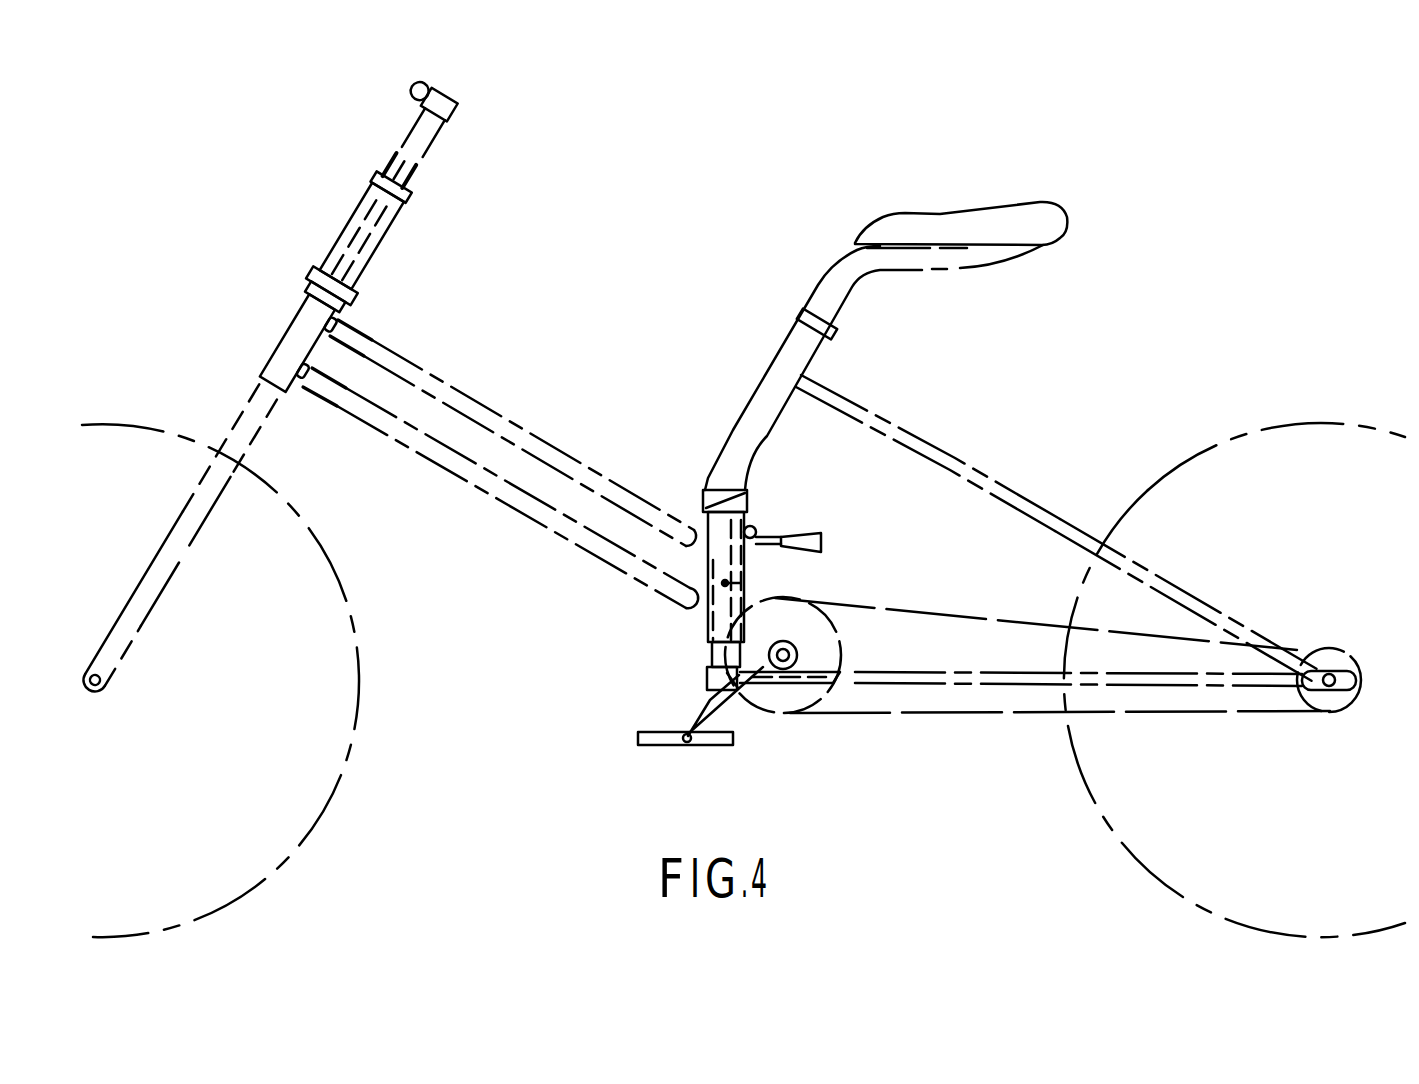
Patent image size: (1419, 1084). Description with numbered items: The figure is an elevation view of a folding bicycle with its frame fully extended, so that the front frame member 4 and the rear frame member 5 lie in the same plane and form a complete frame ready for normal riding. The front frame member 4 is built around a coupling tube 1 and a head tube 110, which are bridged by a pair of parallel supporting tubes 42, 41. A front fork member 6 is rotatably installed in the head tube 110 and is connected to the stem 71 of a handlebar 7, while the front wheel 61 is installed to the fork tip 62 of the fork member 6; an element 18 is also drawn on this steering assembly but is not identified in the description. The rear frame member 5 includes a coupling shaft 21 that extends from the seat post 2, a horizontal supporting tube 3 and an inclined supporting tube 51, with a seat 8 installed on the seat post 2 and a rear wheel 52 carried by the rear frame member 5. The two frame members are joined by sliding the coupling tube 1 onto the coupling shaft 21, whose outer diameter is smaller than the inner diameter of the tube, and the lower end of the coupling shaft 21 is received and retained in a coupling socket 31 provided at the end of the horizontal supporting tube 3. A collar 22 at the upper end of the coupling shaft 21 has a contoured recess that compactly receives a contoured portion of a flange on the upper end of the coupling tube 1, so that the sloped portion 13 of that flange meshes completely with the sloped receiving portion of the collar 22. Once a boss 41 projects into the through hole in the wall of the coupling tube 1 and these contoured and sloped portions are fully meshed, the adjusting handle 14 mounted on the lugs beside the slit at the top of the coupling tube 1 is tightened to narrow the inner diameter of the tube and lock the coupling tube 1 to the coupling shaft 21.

The coupling tube 1 is at (708, 572).
The seat post 2 is at (714, 467).
The horizontal supporting tube 3 is at (801, 684).
The front frame member 4 is at (485, 391).
The rear frame member 5 is at (957, 450).
The front fork member 6 is at (205, 492).
The handlebar 7 is at (411, 90).
The seat 8 is at (991, 224).
The sloped portion 13 is at (690, 531).
The adjusting handle 14 is at (818, 538).
The steering cylinder 18 is at (348, 224).
The coupling shaft 21 is at (713, 653).
The collar 22 is at (747, 491).
The coupling socket 31 is at (703, 685).
The supporting tube 41 is at (520, 423).
The supporting tube 42 is at (625, 572).
The inclined supporting tube 51 is at (1020, 500).
The rear wheel 52 is at (1115, 793).
The front wheel 61 is at (350, 690).
The fork tip 62 is at (107, 679).
The stem 71 is at (418, 165).
The head tube 110 is at (287, 332).